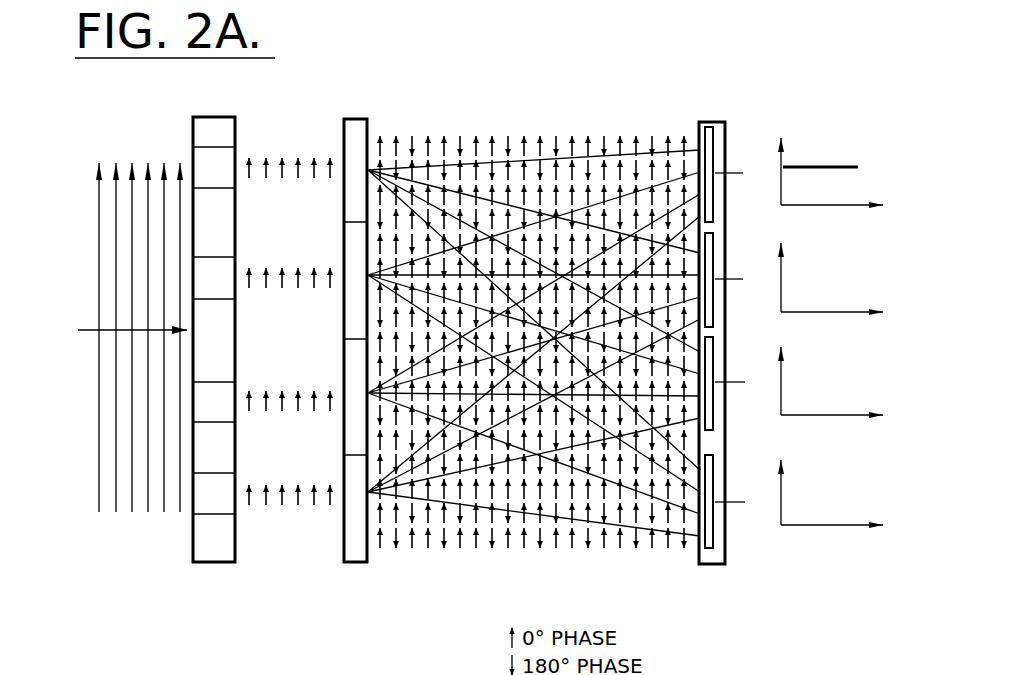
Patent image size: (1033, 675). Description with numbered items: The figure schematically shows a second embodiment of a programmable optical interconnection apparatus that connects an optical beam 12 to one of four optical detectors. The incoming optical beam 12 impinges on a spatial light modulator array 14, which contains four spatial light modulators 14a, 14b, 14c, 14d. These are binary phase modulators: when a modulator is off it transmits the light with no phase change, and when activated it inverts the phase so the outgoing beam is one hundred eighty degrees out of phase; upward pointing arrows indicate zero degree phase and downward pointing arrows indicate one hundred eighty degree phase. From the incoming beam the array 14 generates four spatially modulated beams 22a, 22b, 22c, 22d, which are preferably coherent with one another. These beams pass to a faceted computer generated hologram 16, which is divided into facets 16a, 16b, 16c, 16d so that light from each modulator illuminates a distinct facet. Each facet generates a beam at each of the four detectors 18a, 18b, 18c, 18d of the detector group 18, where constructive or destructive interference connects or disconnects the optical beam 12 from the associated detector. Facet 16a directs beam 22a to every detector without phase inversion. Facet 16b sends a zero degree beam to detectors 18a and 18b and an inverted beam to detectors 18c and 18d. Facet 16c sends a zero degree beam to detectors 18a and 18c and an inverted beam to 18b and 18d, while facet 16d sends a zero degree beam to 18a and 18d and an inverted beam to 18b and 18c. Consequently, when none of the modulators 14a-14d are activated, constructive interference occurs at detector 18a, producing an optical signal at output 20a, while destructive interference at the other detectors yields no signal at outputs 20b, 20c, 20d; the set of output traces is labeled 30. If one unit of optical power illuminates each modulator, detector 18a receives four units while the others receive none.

The optical beam 12 is at (101, 160).
The spatial light modulator array 14 is at (196, 316).
The spatial light modulator 14a is at (193, 163).
The spatial light modulator 14b is at (235, 263).
The spatial light modulator 14c is at (235, 407).
The spatial light modulator 14d is at (195, 500).
The faceted computer generated hologram 16 is at (491, 330).
The hologram facet 16a is at (358, 132).
The hologram facet 16b is at (352, 236).
The hologram facet 16c is at (357, 390).
The hologram facet 16d is at (372, 556).
The optical detectors 18 is at (715, 339).
The optical detector 18a is at (703, 143).
The optical detector 18b is at (713, 252).
The optical detector 18c is at (710, 412).
The optical detector 18d is at (710, 528).
The optical signal 20a is at (733, 173).
The optical signal 20b is at (742, 280).
The optical signal 20c is at (745, 383).
The optical signal 20d is at (745, 503).
The spatially modulated beam 22a is at (303, 147).
The spatially modulated beam 22b is at (310, 298).
The spatially modulated beam 22c is at (312, 418).
The spatially modulated beam 22d is at (280, 517).
The output signal set 30 is at (809, 285).